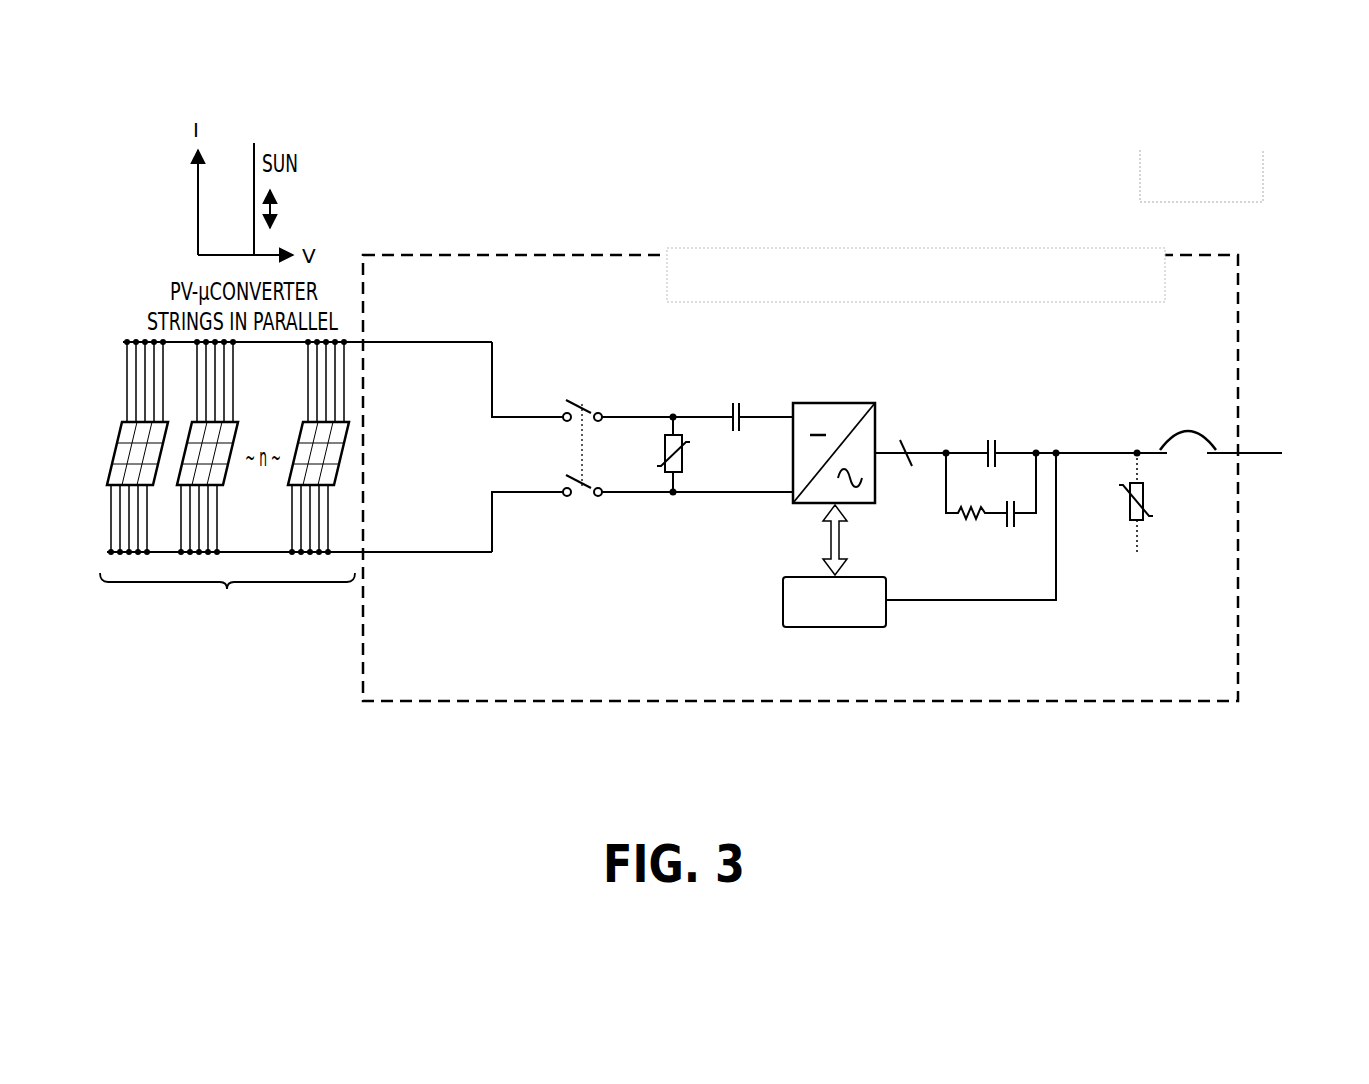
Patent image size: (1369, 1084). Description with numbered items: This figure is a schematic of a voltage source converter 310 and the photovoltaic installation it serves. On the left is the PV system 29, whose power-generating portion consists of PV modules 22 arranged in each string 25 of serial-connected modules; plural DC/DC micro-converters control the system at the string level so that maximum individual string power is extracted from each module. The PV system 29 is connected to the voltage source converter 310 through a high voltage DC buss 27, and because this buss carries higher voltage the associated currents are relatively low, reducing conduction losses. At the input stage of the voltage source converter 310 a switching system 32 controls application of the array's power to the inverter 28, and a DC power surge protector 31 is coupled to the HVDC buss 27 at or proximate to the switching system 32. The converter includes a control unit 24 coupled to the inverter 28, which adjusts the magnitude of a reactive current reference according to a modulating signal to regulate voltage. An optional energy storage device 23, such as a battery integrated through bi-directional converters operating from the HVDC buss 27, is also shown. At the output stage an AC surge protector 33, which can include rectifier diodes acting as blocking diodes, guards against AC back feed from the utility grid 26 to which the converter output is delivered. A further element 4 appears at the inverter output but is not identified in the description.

The PV module 22 is at (113, 455).
The string 25 is at (227, 482).
The PV system 29 is at (272, 632).
The HVDC buss 27 is at (430, 554).
The switching system 32 is at (592, 397).
The DC power surge protector 31 is at (660, 458).
The inverter 28 is at (844, 400).
The current sensor 4 is at (914, 462).
The energy storage device 23 is at (1040, 392).
The control unit 24 is at (834, 629).
The AC surge protector 33 is at (1126, 510).
The utility grid 26 is at (1256, 447).
The voltage source converter 310 is at (1201, 176).